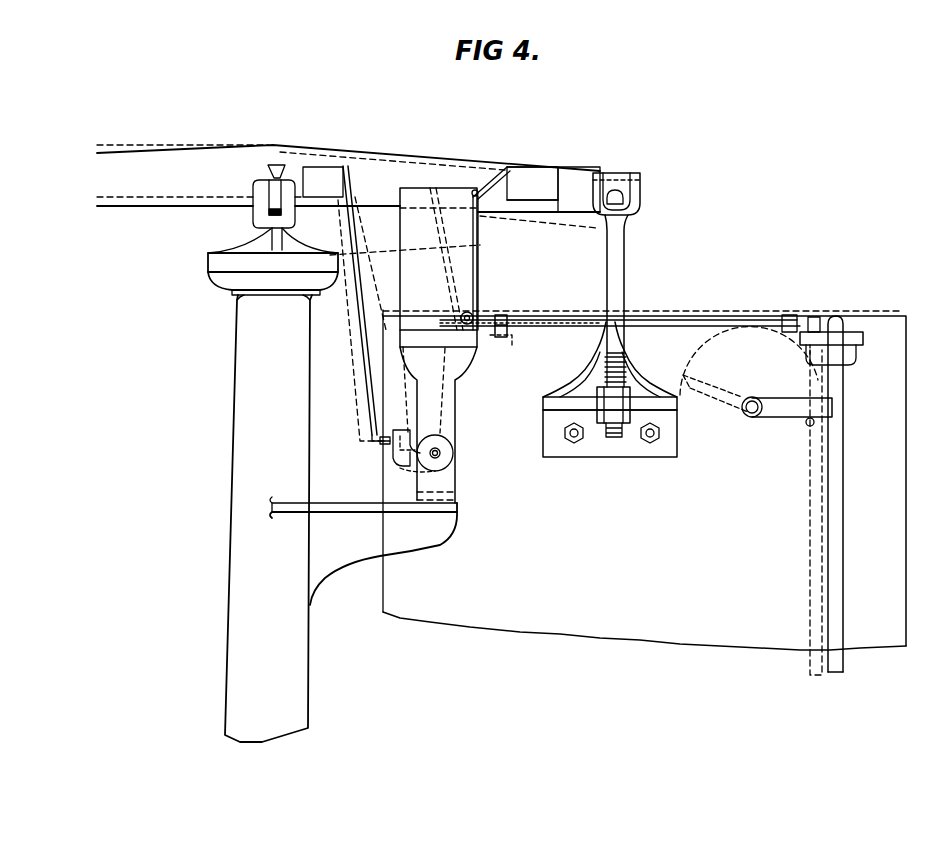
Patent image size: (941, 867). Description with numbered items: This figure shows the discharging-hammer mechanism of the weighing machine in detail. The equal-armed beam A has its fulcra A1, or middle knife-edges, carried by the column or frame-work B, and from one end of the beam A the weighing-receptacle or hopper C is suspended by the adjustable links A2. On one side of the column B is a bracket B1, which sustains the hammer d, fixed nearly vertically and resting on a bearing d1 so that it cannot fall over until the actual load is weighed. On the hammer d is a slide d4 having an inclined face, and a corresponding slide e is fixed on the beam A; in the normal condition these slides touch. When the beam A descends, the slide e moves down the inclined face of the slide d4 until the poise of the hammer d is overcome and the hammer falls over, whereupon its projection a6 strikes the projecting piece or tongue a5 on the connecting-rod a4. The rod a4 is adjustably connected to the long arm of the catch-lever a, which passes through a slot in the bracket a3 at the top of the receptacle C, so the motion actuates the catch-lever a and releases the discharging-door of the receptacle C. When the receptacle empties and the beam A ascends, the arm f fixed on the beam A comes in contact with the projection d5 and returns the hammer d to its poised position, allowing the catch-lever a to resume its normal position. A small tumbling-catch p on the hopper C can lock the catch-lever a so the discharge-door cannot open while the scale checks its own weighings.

The equal-armed beam A is at (348, 237).
The fulcra A1 is at (280, 176).
The adjustable links A2 is at (603, 332).
The columns or frame-work B is at (273, 485).
The bracket B1 is at (363, 551).
The receptacle or hopper C is at (644, 480).
The catch-lever a is at (845, 430).
The bracket a3 is at (749, 369).
The rod a4 is at (640, 322).
The projection or tongue a5 is at (462, 308).
The projection a6 is at (480, 315).
The hammer d is at (430, 400).
The bearing d1 is at (441, 453).
The slide d4 is at (477, 256).
The projection d5 is at (400, 435).
The slide e is at (532, 189).
The arm f is at (358, 325).
The tumbling-catch p is at (787, 411).